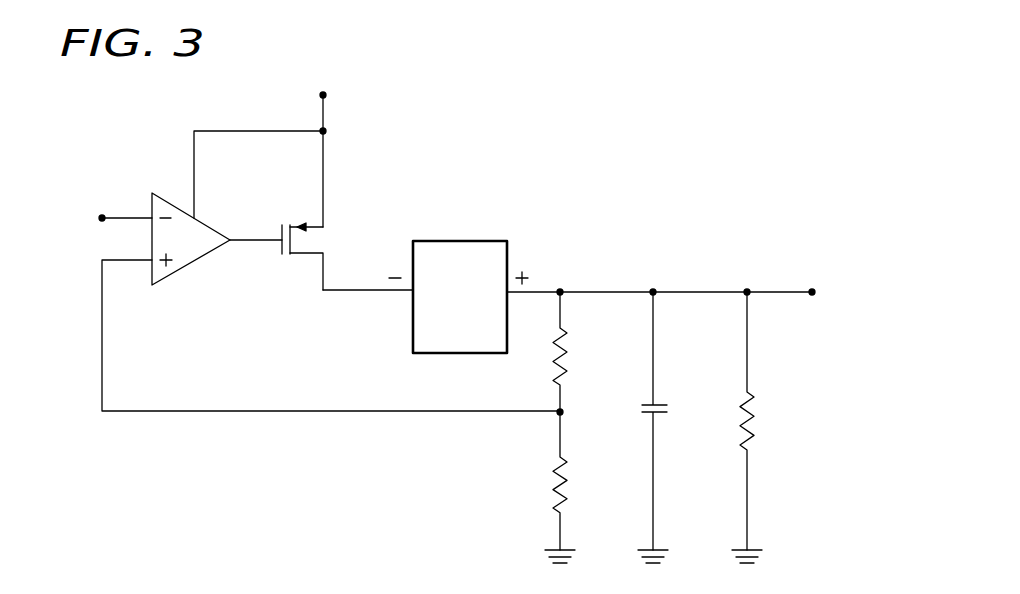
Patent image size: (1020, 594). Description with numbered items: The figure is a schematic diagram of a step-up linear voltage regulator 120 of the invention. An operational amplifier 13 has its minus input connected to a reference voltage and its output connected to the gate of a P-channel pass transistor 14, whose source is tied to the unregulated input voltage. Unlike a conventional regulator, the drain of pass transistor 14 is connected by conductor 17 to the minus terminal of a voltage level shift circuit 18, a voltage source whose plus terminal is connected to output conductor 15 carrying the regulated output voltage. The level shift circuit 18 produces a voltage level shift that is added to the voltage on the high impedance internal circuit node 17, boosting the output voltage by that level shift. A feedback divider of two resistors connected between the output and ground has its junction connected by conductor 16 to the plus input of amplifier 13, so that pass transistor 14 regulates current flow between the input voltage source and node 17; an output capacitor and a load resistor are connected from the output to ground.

The operational amplifier 13 is at (195, 256).
The pass transistor 14 is at (292, 240).
The output conductor 15 is at (683, 292).
The conductor 16 is at (387, 411).
The conductor / internal circuit node 17 is at (343, 290).
The voltage level shift circuit 18 is at (460, 241).
The voltage regulator 120 is at (207, 432).